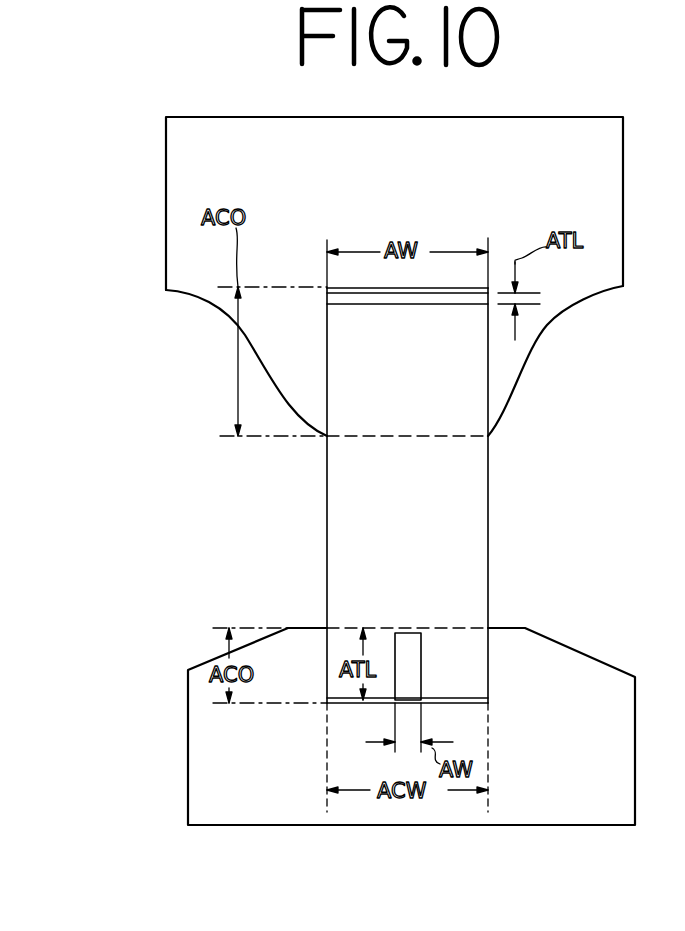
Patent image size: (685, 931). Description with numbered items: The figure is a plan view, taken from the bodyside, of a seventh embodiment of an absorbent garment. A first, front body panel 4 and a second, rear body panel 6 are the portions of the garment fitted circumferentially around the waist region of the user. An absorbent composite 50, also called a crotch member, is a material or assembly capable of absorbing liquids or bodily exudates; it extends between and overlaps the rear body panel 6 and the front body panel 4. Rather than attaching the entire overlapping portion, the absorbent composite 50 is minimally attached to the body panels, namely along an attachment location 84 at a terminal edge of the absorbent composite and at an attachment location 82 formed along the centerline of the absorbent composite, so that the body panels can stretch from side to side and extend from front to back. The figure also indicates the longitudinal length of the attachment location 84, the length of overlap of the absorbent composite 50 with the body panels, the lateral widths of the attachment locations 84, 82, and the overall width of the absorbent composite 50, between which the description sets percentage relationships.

The second, rear body panel 6 is at (346, 163).
The first, front body panel 4 is at (240, 788).
The absorbent composite 50 is at (363, 516).
The attachment location 84 is at (417, 289).
The attachment location 82 is at (421, 665).